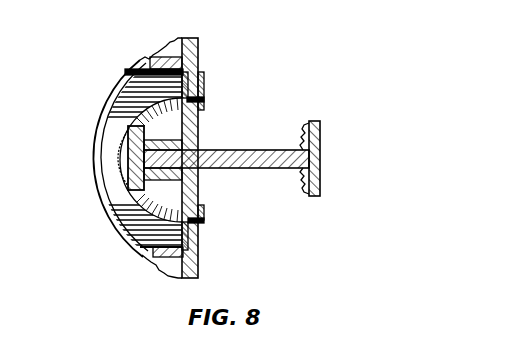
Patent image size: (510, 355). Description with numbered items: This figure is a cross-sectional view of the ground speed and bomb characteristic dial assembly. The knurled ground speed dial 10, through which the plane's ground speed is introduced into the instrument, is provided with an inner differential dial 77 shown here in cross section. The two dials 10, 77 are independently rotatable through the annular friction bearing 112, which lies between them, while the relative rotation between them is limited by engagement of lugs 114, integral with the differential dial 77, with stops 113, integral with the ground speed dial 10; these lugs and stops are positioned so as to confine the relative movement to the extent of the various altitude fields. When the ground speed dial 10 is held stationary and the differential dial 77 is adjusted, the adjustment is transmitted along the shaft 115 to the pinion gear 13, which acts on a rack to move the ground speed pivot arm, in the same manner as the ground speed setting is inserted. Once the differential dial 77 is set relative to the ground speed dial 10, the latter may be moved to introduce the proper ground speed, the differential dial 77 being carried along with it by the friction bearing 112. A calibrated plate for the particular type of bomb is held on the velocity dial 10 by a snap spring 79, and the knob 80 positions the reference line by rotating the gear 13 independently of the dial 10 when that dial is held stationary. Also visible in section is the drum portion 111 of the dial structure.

The ground speed dial 10 is at (197, 37).
The pinion gear 13 is at (313, 122).
The inner differential dial 77 is at (199, 135).
The snap spring 79 is at (198, 263).
The knob 80 is at (120, 140).
The ring 111 is at (142, 63).
The annular friction bearing 112 is at (200, 221).
The stops 113 is at (205, 77).
The lugs 114 is at (206, 212).
The shaft 115 is at (225, 170).